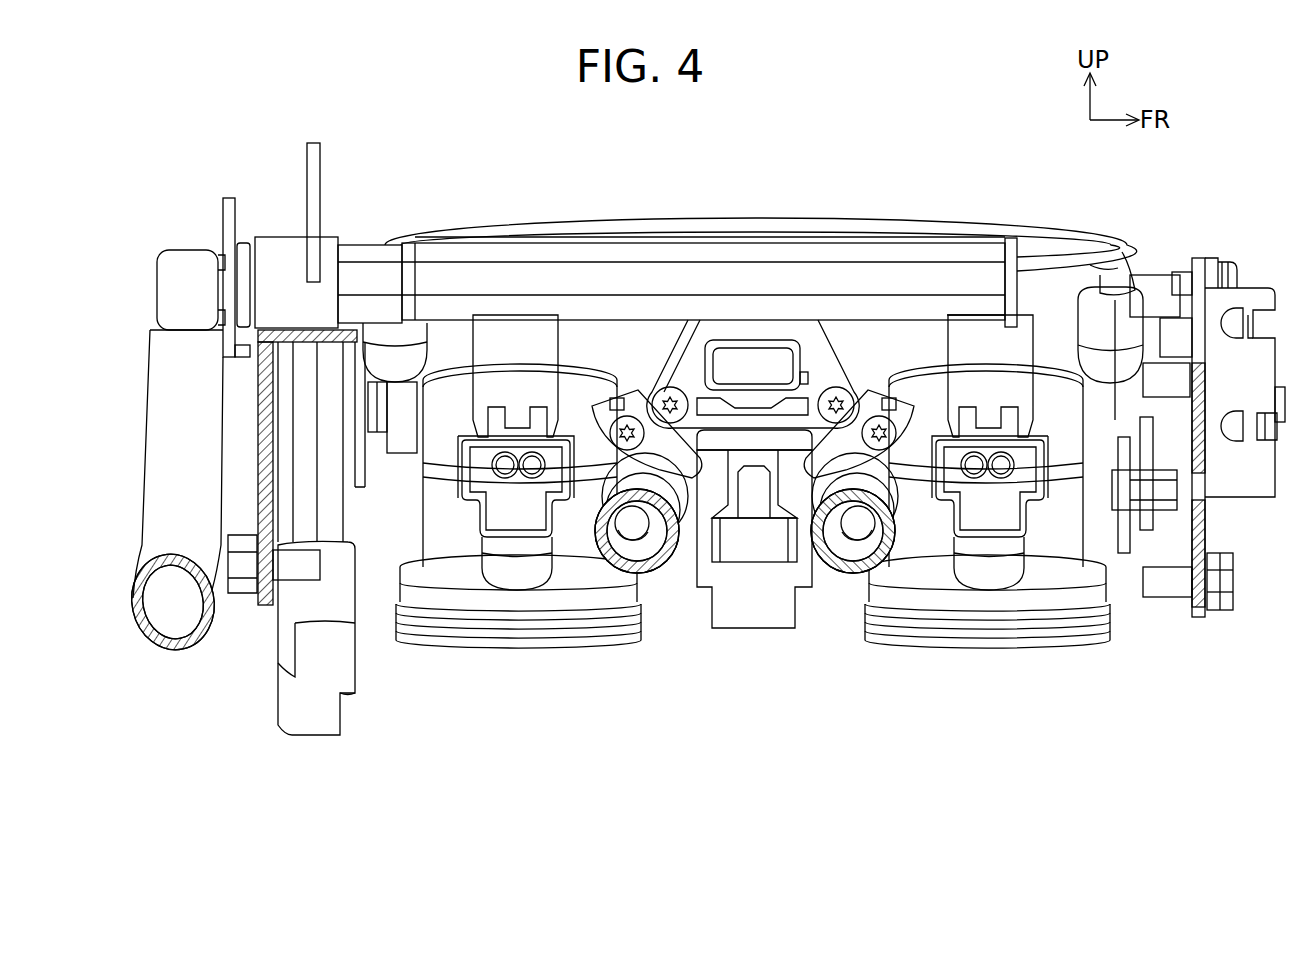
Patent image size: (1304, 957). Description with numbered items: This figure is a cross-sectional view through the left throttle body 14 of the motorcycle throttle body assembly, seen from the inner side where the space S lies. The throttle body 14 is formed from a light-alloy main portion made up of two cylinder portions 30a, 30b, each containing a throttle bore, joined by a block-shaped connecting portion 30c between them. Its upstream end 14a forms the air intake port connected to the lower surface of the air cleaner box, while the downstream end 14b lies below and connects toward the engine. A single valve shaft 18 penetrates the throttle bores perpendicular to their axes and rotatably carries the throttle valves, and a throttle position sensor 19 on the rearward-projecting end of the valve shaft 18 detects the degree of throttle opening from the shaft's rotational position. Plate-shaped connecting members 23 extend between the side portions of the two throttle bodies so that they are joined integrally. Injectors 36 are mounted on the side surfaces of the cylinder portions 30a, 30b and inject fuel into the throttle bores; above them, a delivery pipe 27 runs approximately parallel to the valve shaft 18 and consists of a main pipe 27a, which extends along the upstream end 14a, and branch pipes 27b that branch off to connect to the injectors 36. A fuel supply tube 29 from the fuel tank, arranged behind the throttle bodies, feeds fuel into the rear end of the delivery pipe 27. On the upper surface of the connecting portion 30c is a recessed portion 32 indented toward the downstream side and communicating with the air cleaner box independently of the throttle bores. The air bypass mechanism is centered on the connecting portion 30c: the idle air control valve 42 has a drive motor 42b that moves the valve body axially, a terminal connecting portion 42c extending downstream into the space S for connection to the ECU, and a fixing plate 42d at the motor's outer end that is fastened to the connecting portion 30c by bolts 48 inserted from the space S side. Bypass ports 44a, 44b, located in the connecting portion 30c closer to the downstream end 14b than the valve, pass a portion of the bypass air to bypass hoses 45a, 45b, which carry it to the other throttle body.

The throttle body 14 is at (886, 226).
The upstream end 14a is at (567, 215).
The downstream end 14b is at (553, 648).
The valve shaft 18 is at (375, 428).
The throttle position sensor 19 is at (300, 410).
The connecting member 23 is at (266, 490).
The delivery pipe 27 is at (359, 238).
The main pipe 27a is at (775, 266).
The branch pipe 27b is at (508, 340).
The fuel supply tube 29 is at (172, 650).
The cylinder portion 30a is at (1072, 598).
The cylinder portion 30b is at (530, 600).
The connecting portion 30c is at (670, 337).
The recessed portion 32 is at (641, 238).
The injector 36 is at (506, 505).
The control valve 42 is at (757, 449).
The drive motor 42b is at (763, 380).
The terminal connecting portion 42c is at (722, 497).
The fixing plate 42d is at (822, 350).
The bypass port 44a is at (880, 552).
The bypass port 44b is at (622, 560).
The bypass hose 45a is at (845, 582).
The bypass hose 45b is at (660, 572).
The bolt 48 is at (675, 425).